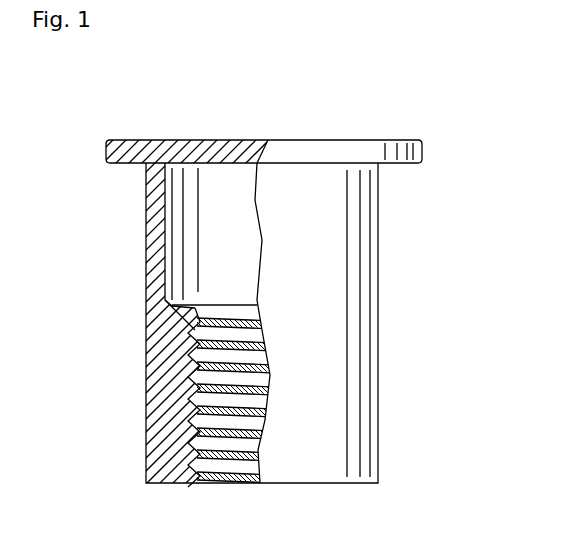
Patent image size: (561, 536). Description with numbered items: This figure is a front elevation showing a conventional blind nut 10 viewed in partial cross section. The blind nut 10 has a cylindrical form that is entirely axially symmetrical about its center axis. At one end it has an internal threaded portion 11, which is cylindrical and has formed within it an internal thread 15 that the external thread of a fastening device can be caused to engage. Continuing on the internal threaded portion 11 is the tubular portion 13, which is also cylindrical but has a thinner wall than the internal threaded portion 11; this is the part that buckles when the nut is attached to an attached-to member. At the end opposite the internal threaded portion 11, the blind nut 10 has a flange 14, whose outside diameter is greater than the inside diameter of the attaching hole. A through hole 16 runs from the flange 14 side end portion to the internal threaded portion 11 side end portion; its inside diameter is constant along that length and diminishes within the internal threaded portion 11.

The blind nut 10 is at (381, 133).
The internal threaded portion 11 is at (171, 383).
The tubular portion 13 is at (158, 254).
The flange 14 is at (124, 140).
The internal thread 15 is at (216, 462).
The through hole 16 is at (179, 207).